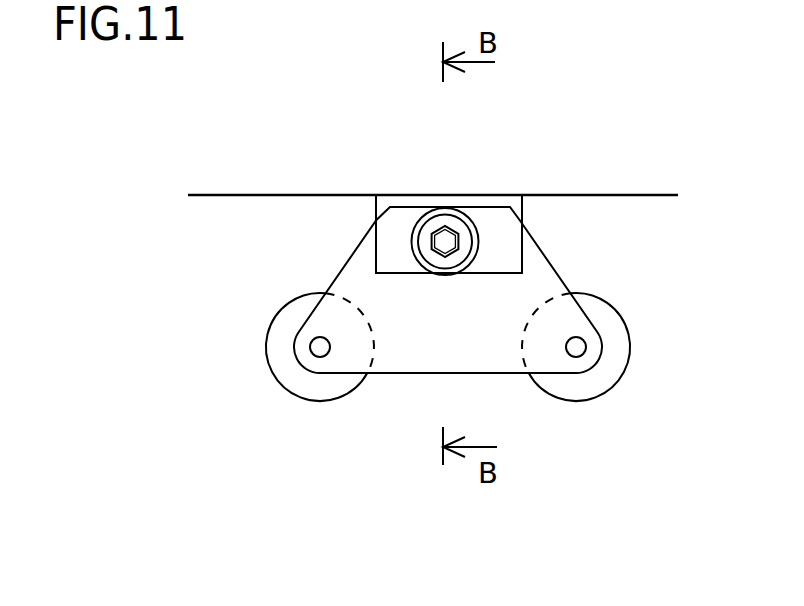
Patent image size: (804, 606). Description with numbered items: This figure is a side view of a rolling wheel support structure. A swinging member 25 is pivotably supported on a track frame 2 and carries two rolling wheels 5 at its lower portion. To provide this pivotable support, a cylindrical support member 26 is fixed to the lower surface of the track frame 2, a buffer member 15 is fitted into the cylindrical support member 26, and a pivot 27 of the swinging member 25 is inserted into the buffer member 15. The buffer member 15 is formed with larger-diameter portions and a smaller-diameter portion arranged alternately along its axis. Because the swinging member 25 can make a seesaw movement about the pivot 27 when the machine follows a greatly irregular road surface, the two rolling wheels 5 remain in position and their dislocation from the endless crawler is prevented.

The track frame 2 is at (433, 236).
The rolling wheel 5 is at (298, 380).
The buffer member 15 is at (427, 230).
The swinging member 25 is at (545, 280).
The cylindrical support member 26 is at (477, 226).
The pivot 27 is at (448, 240).